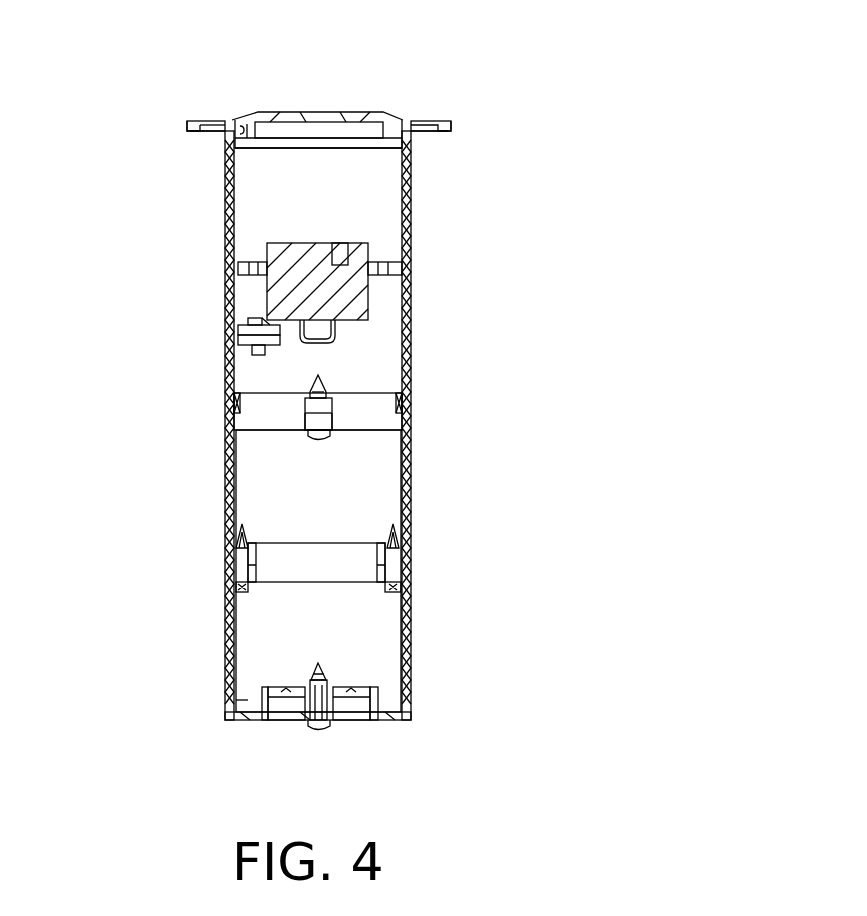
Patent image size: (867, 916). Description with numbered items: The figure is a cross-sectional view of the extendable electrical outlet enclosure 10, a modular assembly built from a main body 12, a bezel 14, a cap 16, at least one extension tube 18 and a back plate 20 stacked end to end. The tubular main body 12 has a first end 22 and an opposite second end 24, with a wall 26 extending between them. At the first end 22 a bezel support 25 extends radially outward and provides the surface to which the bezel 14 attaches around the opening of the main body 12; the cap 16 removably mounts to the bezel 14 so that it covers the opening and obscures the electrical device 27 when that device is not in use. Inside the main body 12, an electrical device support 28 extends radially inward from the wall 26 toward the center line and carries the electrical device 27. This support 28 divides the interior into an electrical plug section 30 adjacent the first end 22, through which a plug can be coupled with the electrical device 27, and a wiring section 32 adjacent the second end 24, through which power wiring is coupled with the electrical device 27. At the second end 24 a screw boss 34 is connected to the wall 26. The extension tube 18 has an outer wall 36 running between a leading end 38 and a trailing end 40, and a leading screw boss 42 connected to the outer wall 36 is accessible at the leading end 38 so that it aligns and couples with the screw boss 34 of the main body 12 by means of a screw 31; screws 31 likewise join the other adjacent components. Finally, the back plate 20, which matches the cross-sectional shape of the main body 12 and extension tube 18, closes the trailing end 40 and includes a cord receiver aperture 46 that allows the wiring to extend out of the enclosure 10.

The extendable electrical outlet enclosure 10 is at (116, 106).
The main body 12 is at (226, 210).
The bezel 14 is at (437, 118).
The cap 16 is at (318, 113).
The extension tube 18 is at (411, 605).
The back plate 20 is at (388, 718).
The first end 22 is at (225, 135).
The second end 24 is at (405, 402).
The bezel support 25 is at (450, 124).
The wall 26 is at (235, 352).
The electrical device 27 is at (338, 282).
The electrical device support 28 is at (253, 273).
The electrical plug section 30 is at (360, 205).
The screw 31 is at (390, 538).
The wiring section 32 is at (385, 340).
The screw boss 34 is at (333, 412).
The outer wall 36 is at (226, 433).
The leading end 38 is at (270, 393).
The trailing end 40 is at (245, 543).
The leading screw boss 42 is at (320, 420).
The cord receiver aperture 46 is at (293, 702).